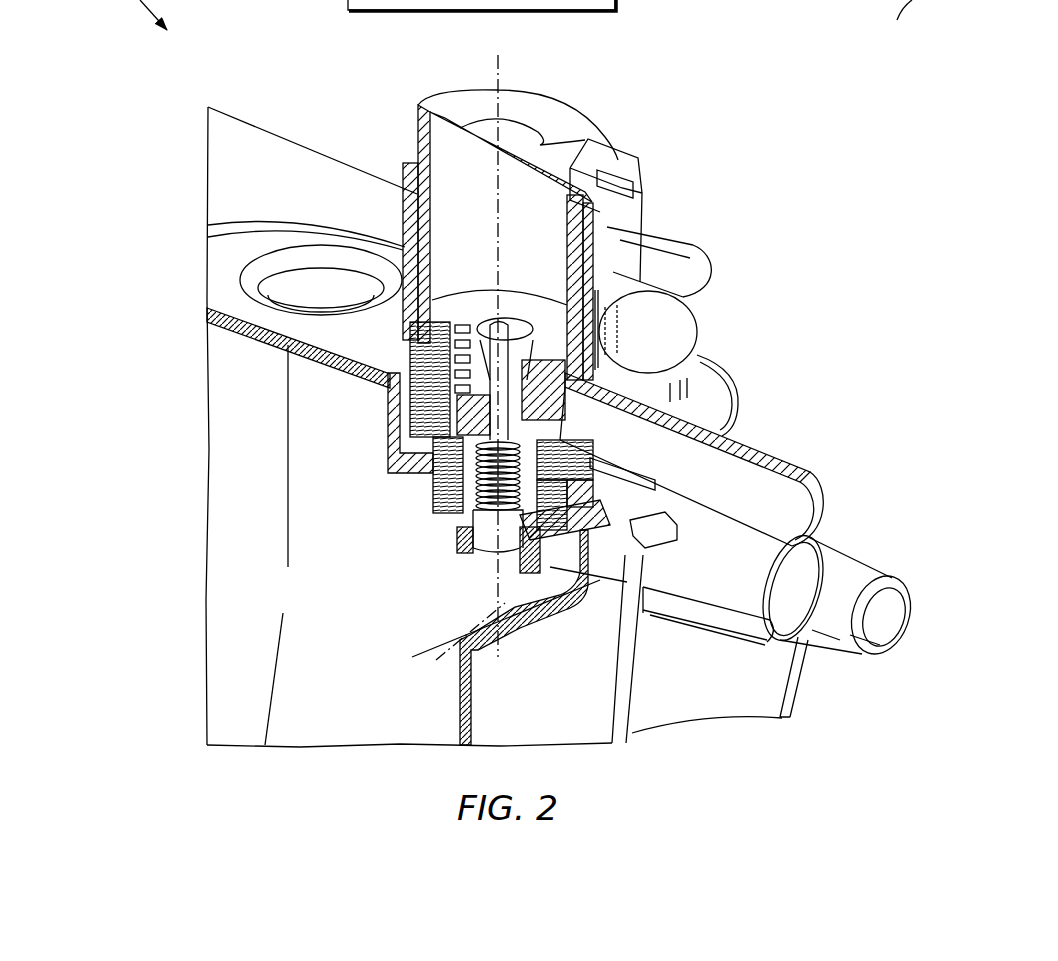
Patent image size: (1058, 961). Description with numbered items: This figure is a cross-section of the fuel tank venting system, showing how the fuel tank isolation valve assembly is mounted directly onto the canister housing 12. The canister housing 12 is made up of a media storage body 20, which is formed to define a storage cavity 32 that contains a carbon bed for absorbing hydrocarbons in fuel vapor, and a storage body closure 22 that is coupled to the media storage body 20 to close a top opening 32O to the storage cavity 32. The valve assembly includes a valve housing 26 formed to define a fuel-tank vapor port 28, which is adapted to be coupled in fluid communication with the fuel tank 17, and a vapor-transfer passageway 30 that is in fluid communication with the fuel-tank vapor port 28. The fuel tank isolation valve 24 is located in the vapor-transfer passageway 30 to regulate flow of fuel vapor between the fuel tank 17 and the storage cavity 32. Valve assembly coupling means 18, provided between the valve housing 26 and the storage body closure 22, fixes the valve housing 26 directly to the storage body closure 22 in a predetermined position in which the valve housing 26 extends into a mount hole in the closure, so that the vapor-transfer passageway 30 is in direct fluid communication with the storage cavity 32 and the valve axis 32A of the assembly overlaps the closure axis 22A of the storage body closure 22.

The canister housing 12 is at (88, 214).
The fuel tank 17 is at (822, 503).
The valve assembly coupling means 18 is at (621, 565).
The media storage body 20 is at (351, 764).
The storage body closure 22 is at (266, 144).
The closure axis 22A is at (434, 658).
The fuel tank isolation valve 24 is at (885, 117).
The valve housing 26 is at (604, 326).
The fuel-tank vapor port 28 is at (918, 463).
The vapor-transfer passageway 30 is at (366, 434).
The storage cavity 32 is at (463, 568).
The valve axis 32A is at (498, 172).
The top opening 32O is at (356, 393).